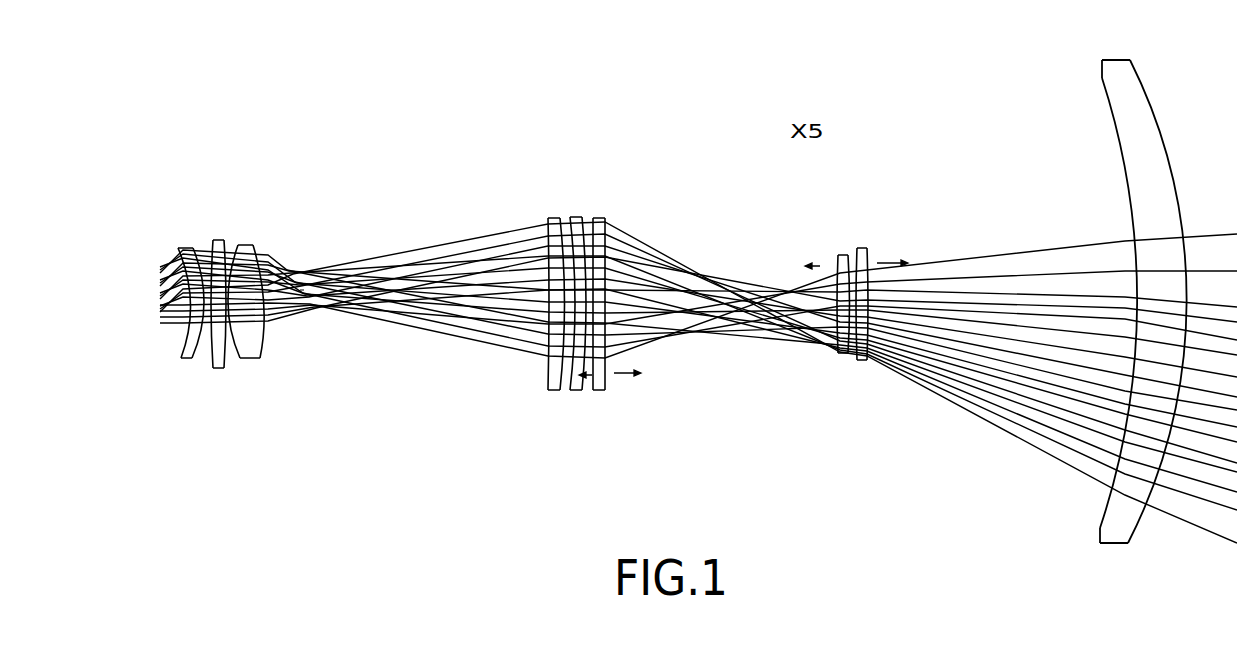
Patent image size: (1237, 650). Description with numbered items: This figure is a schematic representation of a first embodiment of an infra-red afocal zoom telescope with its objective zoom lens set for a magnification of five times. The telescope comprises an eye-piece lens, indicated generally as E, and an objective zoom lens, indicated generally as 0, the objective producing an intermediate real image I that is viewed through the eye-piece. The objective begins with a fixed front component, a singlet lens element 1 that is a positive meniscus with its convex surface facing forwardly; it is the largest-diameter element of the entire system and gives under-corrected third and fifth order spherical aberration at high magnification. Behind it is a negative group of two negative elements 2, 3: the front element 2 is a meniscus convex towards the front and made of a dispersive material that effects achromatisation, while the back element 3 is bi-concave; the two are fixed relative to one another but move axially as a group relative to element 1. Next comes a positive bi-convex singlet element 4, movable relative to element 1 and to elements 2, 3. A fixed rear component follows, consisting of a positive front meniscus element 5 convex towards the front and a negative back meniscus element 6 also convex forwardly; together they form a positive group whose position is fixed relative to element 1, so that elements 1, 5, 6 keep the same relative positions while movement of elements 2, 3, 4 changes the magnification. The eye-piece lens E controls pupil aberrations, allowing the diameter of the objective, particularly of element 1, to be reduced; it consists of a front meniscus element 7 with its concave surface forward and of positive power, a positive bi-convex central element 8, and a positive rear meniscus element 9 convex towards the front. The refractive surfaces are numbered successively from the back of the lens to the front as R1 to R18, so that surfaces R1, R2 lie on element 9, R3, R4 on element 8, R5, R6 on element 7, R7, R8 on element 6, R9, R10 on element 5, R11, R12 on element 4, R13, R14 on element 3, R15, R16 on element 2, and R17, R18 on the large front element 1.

The singlet lens element 1 is at (1116, 515).
The front negative lens element 2 is at (860, 362).
The back negative lens element 3 is at (842, 357).
The bi-convex singlet element 4 is at (603, 382).
The front element of rear component 5 is at (566, 393).
The back element of rear component 6 is at (549, 392).
The front meniscus element 7 is at (252, 360).
The bi-convex central element 8 is at (218, 370).
The rear meniscus element 9 is at (182, 361).
The refractive surface R1 is at (176, 257).
The refractive surface R2 is at (195, 248).
The refractive surface R3 is at (211, 355).
The refractive surface R4 is at (232, 360).
The refractive surface R5 is at (237, 244).
The refractive surface R6 is at (256, 246).
The refractive surface R7 is at (546, 220).
The refractive surface R8 is at (555, 218).
The refractive surface R9 is at (563, 393).
The refractive surface R10 is at (580, 393).
The refractive surface R11 is at (593, 218).
The refractive surface R12 is at (608, 218).
The refractive surface R13 is at (835, 259).
The refractive surface R14 is at (850, 253).
The refractive surface R15 is at (850, 363).
The refractive surface R16 is at (870, 259).
The refractive surface R17 is at (1102, 90).
The refractive surface R18 is at (1150, 98).
The eye-piece lens E is at (275, 212).
The intermediate real image I is at (317, 258).
The objective zoom lens 0 is at (1137, 50).